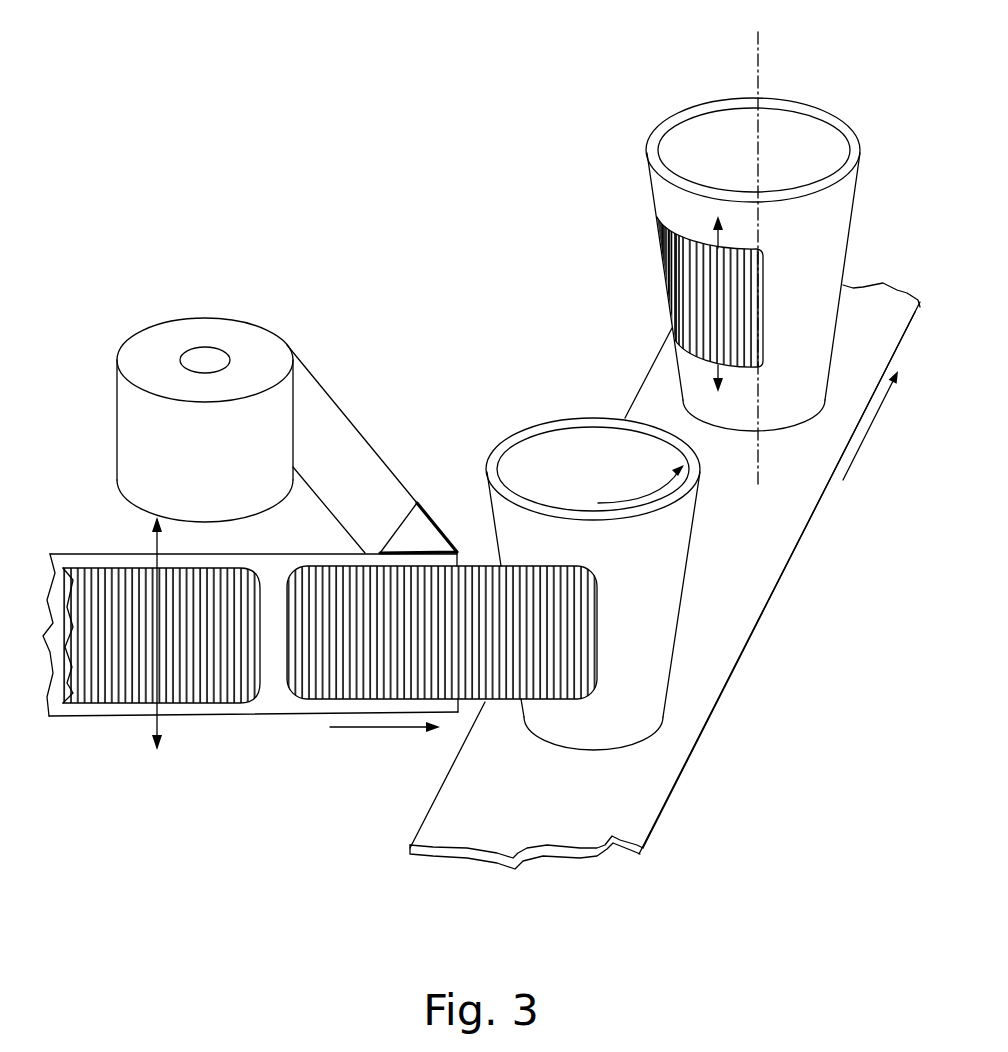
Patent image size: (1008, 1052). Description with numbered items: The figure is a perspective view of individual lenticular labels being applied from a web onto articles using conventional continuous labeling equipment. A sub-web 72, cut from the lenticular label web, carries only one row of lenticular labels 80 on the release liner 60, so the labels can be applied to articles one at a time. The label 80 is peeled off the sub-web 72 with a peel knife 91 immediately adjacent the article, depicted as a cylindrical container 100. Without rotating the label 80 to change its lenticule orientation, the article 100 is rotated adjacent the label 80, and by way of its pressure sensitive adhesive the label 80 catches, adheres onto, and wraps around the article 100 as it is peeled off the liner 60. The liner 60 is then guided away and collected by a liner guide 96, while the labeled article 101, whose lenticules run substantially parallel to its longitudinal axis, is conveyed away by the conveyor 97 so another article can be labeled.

The liner guide 96 is at (203, 358).
The release liner 60 is at (357, 420).
The peel knife 91 is at (417, 528).
The sub-web 72 is at (80, 740).
The lenticular label 80 is at (289, 702).
The conveyor 97 is at (795, 555).
The article 100 is at (683, 588).
The labeled article 101 is at (848, 232).